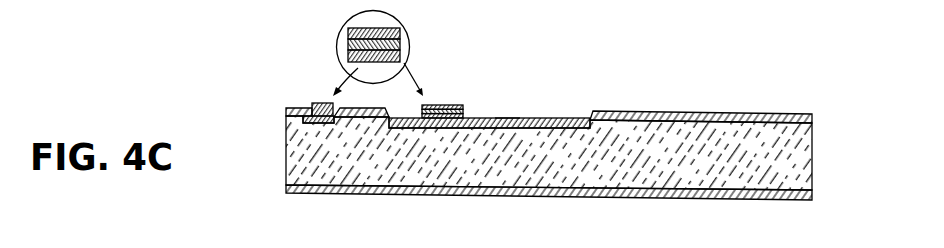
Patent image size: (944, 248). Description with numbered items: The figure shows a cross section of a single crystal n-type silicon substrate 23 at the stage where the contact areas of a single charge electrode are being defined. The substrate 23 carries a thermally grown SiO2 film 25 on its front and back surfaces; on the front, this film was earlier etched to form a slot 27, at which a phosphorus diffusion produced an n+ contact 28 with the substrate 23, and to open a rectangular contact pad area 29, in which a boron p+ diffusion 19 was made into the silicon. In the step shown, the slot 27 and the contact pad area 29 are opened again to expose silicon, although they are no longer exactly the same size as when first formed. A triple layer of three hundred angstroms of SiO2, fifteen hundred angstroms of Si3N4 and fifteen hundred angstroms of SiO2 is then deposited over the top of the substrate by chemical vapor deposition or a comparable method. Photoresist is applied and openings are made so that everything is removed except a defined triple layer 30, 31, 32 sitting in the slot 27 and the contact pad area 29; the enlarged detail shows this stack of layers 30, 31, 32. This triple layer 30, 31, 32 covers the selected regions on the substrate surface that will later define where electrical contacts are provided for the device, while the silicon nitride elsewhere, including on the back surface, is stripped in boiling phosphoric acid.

The p+ diffusion 19 is at (527, 119).
The substrate 23 is at (813, 133).
The SiO2 film 25 is at (290, 108).
The slot 27 is at (311, 104).
The n+ contact 28 is at (305, 121).
The contact pad area 29 is at (506, 108).
The triple layer first layer 30 is at (400, 58).
The triple layer second layer 31 is at (400, 45).
The triple layer third layer 32 is at (399, 31).